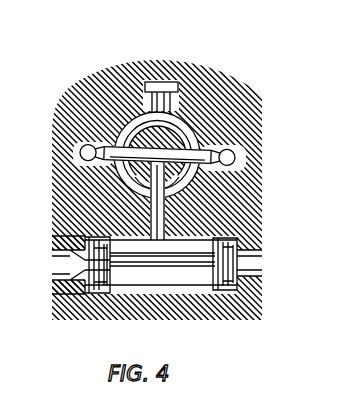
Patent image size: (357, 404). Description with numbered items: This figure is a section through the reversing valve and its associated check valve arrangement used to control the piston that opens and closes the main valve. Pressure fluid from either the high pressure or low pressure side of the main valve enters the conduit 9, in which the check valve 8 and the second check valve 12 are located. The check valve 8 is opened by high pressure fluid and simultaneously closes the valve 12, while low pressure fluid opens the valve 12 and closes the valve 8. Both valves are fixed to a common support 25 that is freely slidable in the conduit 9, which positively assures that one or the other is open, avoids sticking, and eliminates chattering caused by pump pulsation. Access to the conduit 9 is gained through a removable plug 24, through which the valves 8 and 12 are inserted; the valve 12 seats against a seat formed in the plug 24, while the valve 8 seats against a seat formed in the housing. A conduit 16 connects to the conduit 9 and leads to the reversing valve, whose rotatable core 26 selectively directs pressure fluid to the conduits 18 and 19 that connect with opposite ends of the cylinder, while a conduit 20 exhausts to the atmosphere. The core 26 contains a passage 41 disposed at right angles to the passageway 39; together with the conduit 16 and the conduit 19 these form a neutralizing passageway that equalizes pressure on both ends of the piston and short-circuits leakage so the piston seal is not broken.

The check valve 8 is at (232, 285).
The conduit 9 is at (250, 263).
The second check valve 12 is at (97, 290).
The conduit 16 is at (155, 233).
The conduit 18 is at (81, 152).
The conduit 19 is at (233, 157).
The conduit 20 is at (159, 96).
The removable plug 24 is at (60, 272).
The common support 25 is at (150, 273).
The core 26 is at (190, 118).
The passageway 39 is at (120, 173).
The passage 41 is at (137, 190).